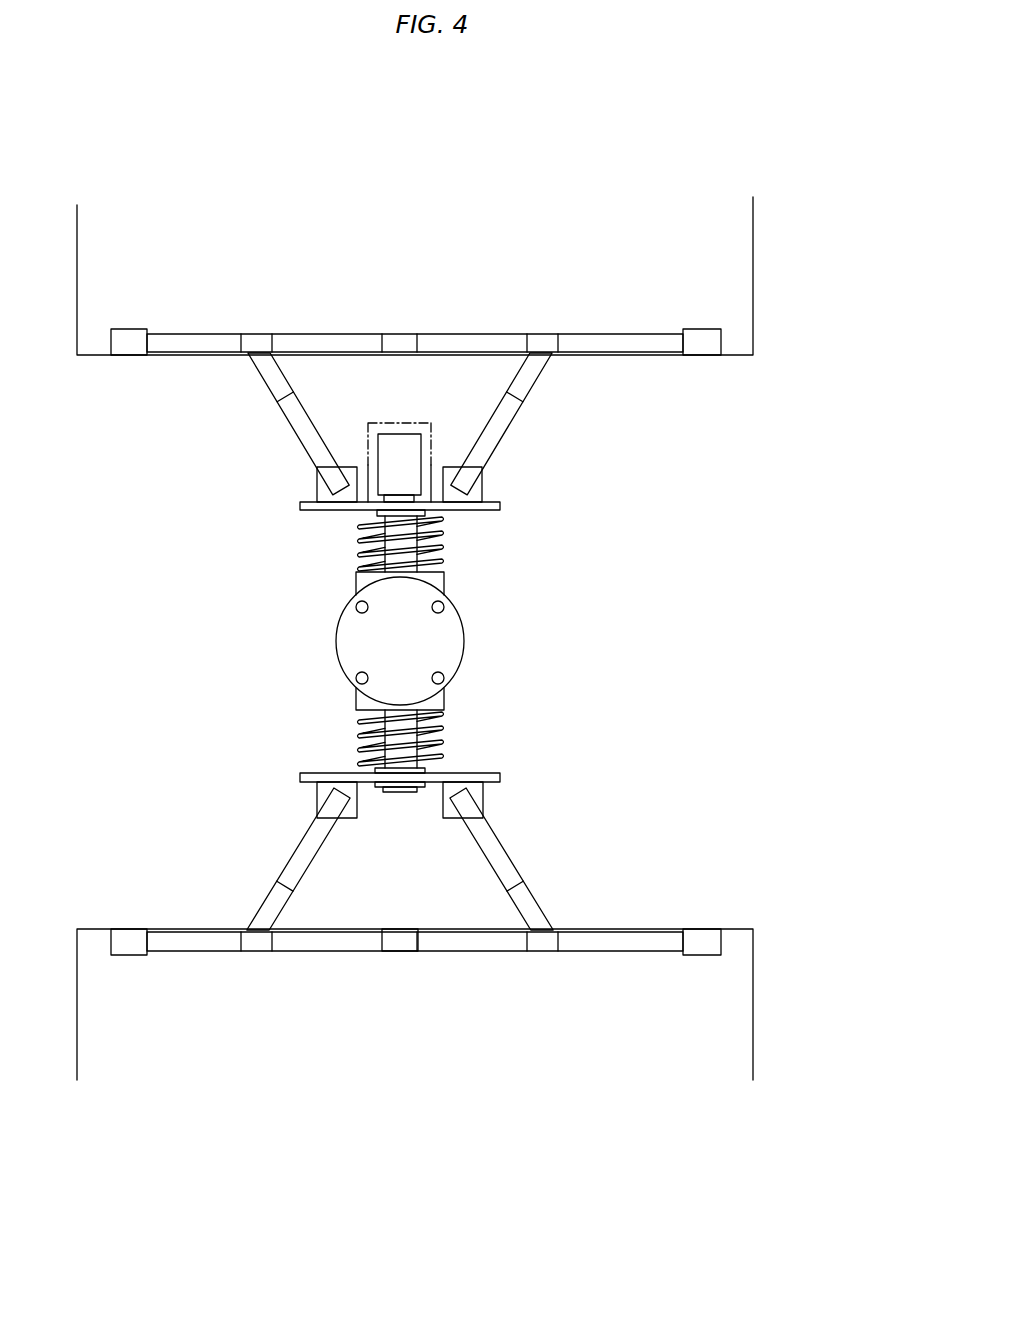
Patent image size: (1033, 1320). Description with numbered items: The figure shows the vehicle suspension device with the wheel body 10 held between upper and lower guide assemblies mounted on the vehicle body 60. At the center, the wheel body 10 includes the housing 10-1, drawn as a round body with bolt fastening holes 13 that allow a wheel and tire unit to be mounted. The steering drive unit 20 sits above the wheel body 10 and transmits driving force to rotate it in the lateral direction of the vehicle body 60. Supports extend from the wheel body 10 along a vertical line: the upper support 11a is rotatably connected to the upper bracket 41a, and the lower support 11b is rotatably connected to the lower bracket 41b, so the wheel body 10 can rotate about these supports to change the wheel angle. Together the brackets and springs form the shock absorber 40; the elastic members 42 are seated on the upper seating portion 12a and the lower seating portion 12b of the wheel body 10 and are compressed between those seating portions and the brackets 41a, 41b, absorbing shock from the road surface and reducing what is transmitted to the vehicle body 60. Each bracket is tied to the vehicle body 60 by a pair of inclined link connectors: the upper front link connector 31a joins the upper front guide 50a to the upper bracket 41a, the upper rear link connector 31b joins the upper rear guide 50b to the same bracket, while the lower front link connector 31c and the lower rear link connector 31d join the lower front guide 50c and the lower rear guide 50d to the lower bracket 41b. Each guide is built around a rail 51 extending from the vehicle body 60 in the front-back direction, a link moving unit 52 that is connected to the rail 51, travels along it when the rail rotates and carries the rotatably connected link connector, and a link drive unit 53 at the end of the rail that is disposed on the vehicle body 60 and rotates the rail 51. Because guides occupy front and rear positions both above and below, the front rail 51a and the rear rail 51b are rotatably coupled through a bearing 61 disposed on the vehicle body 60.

The wheel body 10 is at (322, 654).
The housing 10-1 is at (442, 642).
The upper support 11a is at (440, 545).
The lower support 11b is at (440, 745).
The upper seating portion 12a is at (355, 577).
The lower seating portion 12b is at (355, 695).
The bolt fastening holes 13 is at (445, 602).
The steering drive unit 20 is at (417, 420).
The upper front link connector 31a is at (297, 423).
The upper rear link connector 31b is at (495, 435).
The lower front link connector 31c is at (297, 855).
The lower rear link connector 31d is at (503, 860).
The shock absorber 40 is at (328, 738).
The upper bracket 41a is at (477, 488).
The lower bracket 41b is at (477, 792).
The elastic members 42 is at (360, 540).
The upper front guide 50a is at (184, 364).
The upper rear guide 50b is at (603, 326).
The lower front guide 50c is at (249, 968).
The lower rear guide 50d is at (613, 958).
The rail 51 is at (415, 575).
The front rail 51a is at (204, 338).
The rear rail 51b is at (467, 942).
The link moving unit 52 is at (257, 338).
The link drive unit 53 is at (129, 338).
The vehicle body 60 is at (753, 242).
The bearings 61 is at (400, 340).